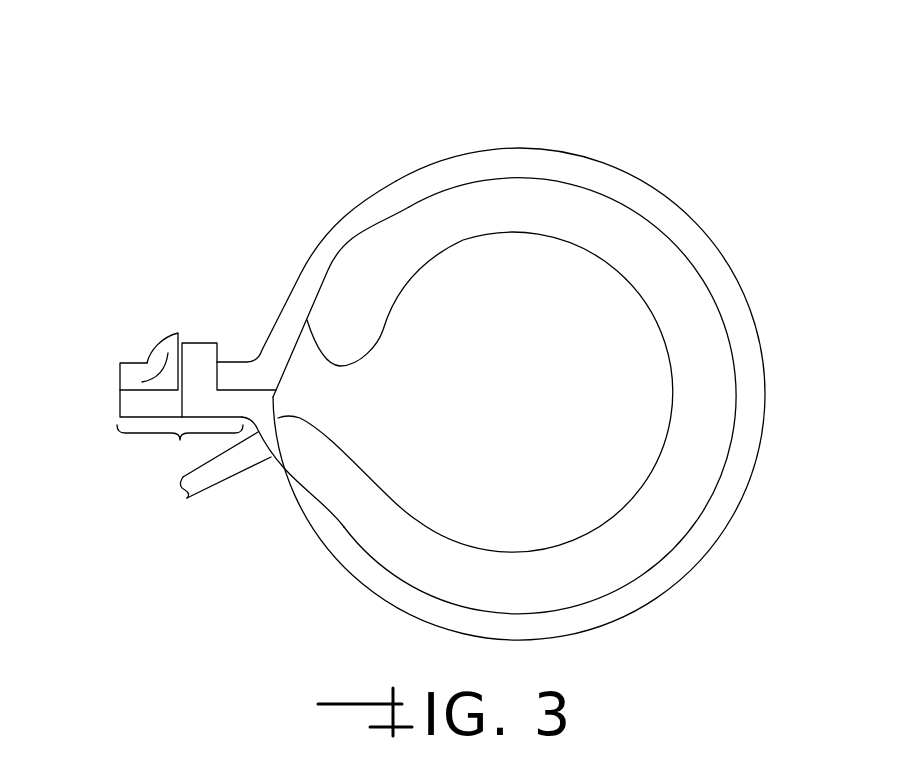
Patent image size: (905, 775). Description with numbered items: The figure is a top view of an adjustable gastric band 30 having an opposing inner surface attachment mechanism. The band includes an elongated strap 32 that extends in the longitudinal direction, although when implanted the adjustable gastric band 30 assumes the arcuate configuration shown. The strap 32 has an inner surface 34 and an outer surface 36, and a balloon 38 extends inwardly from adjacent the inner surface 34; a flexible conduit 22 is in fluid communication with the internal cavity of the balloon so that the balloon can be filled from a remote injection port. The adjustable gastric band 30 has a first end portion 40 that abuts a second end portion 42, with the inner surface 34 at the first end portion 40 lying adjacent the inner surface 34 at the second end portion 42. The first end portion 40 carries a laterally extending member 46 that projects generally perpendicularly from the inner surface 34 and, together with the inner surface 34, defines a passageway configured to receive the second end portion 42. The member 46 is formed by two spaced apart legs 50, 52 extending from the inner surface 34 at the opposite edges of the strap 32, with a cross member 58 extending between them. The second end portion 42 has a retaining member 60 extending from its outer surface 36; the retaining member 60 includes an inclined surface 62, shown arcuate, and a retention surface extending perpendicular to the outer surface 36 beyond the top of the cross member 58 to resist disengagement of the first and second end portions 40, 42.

The flexible conduit 22 is at (225, 478).
The adjustable gastric band 30 is at (532, 128).
The elongated strap 32 is at (748, 294).
The inner surface 34 is at (613, 592).
The outer surface 36 is at (682, 582).
The balloon 38 is at (690, 457).
The first end portion 40 is at (180, 440).
The second end portion 42 is at (112, 318).
The laterally extending member 46 is at (208, 380).
The leg 50 is at (188, 377).
The leg 52 is at (162, 405).
The cross member 58 is at (203, 342).
The retaining member 60 is at (120, 379).
The inclined surface 62 is at (148, 353).